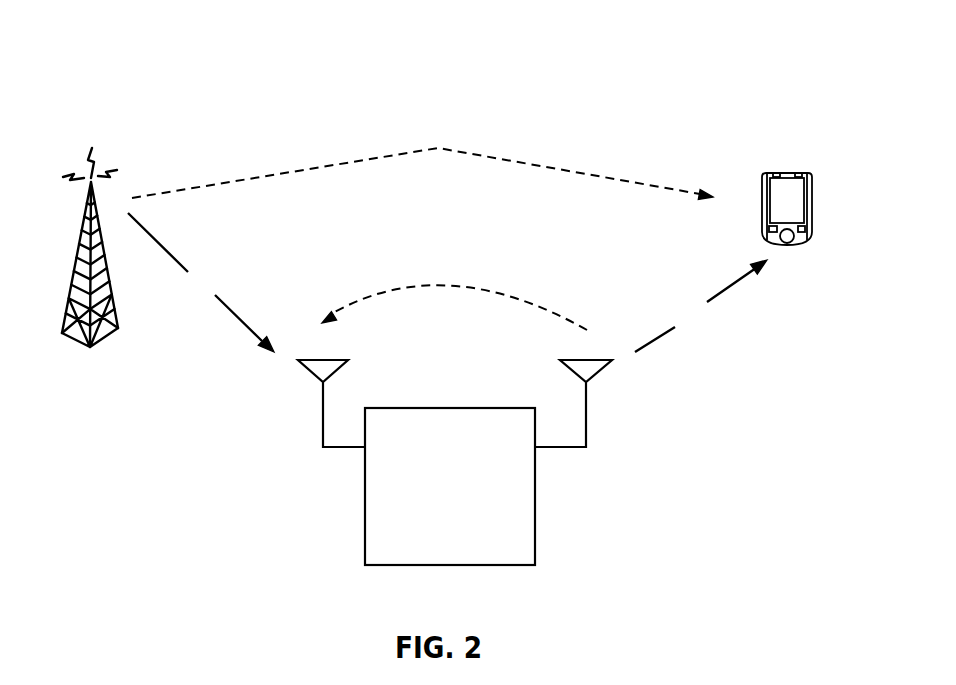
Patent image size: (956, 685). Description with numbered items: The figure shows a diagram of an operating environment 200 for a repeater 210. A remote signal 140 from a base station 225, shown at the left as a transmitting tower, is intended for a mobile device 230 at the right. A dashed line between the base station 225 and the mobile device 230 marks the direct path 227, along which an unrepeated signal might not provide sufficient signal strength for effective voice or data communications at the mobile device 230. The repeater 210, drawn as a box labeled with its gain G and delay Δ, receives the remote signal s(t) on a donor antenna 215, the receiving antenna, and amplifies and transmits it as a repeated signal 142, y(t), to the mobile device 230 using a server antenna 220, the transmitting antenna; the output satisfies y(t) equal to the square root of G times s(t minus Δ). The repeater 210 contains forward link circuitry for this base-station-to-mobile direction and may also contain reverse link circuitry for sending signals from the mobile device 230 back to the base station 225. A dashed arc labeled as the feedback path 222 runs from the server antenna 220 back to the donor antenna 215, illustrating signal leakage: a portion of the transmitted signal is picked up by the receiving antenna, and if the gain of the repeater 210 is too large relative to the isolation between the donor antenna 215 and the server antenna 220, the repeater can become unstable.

The operating environment 200 is at (739, 53).
The base station 225 is at (95, 348).
The remote signal 140 is at (167, 249).
The path 227 is at (545, 168).
The feedback path 222 is at (482, 290).
The donor antenna 215 is at (337, 370).
The server antenna 220 is at (568, 370).
The repeater 210 is at (470, 565).
The repeated signal 142 is at (733, 284).
The mobile device 230 is at (782, 173).